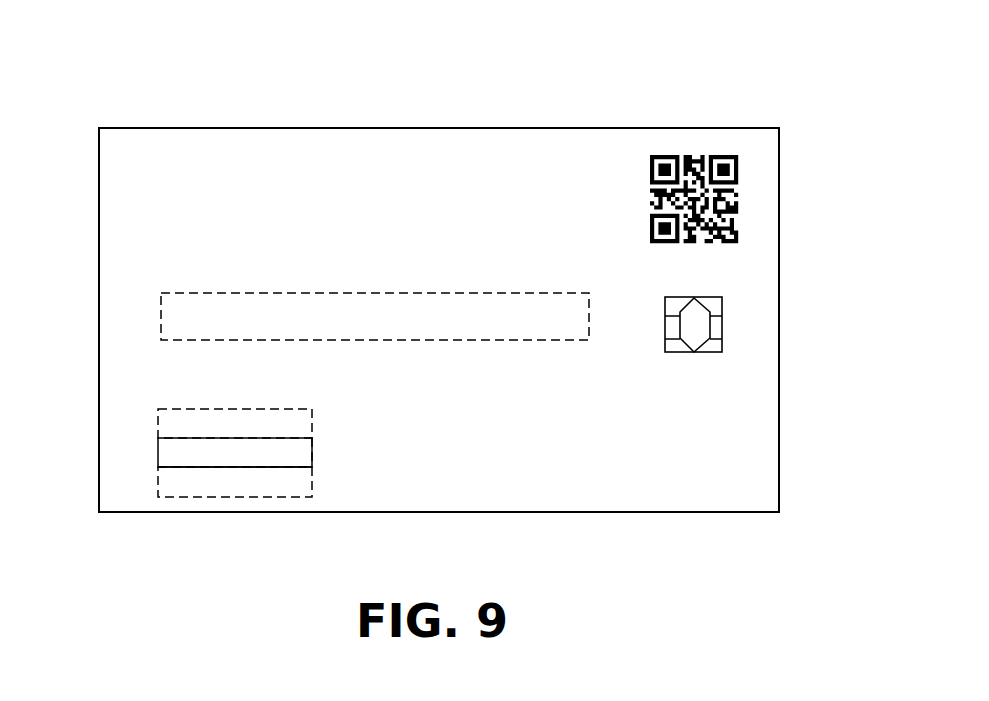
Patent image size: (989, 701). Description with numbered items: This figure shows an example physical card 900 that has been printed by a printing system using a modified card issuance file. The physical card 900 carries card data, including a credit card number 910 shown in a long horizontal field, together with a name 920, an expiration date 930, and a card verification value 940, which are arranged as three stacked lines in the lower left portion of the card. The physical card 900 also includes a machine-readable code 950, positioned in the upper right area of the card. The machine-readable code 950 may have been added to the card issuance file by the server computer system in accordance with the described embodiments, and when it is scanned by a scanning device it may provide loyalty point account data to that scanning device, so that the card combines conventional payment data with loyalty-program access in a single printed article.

The physical card 900 is at (74, 94).
The credit card number 910 is at (161, 317).
The name 920 is at (158, 422).
The expiration date 930 is at (158, 460).
The card verification value 940 is at (158, 495).
The machine-readable code 950 is at (737, 175).